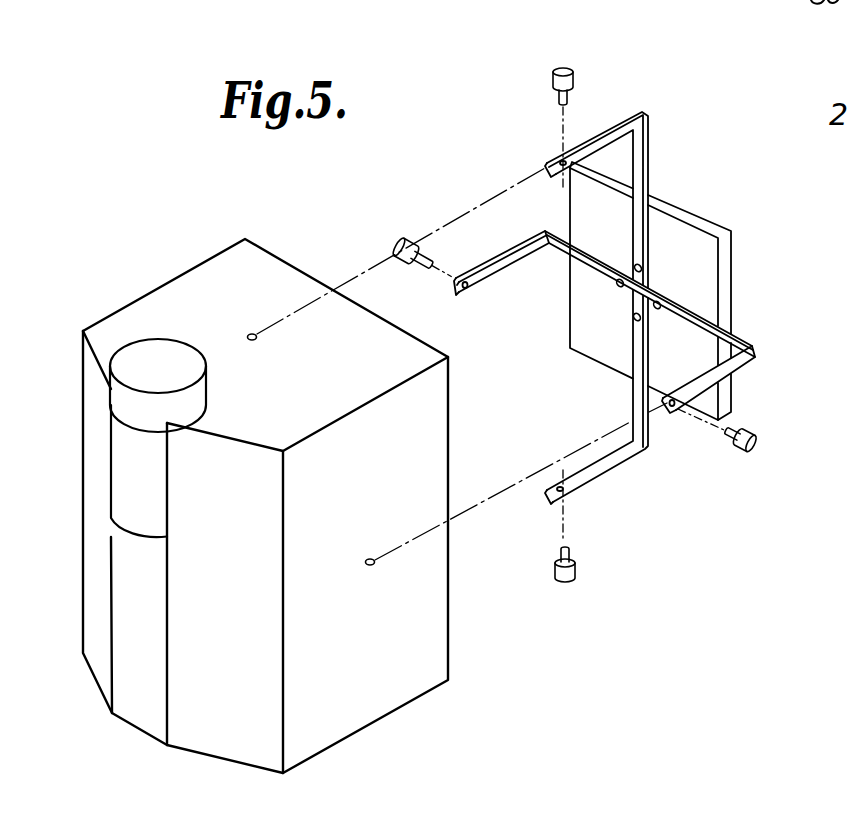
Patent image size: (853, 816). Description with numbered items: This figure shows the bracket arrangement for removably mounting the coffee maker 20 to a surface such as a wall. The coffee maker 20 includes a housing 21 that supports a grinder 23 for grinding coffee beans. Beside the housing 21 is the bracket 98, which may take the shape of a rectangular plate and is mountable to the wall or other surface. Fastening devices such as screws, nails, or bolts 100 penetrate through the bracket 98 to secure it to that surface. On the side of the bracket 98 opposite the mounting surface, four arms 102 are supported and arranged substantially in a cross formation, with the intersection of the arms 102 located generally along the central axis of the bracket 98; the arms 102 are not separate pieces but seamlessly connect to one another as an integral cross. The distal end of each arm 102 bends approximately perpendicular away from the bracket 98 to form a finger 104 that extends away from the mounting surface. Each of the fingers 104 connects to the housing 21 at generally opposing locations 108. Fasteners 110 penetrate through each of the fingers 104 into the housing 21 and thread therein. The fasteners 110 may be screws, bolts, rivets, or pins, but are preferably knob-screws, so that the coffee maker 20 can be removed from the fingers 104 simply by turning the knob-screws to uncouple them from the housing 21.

The coffee maker 20 is at (274, 469).
The housing 21 is at (424, 690).
The grinder 23 is at (120, 460).
The bracket 98 is at (728, 272).
The bolts 100 is at (660, 301).
The arms 102 is at (570, 160).
The finger 104 is at (488, 258).
The locations 108 is at (253, 333).
The fasteners 110 is at (552, 76).